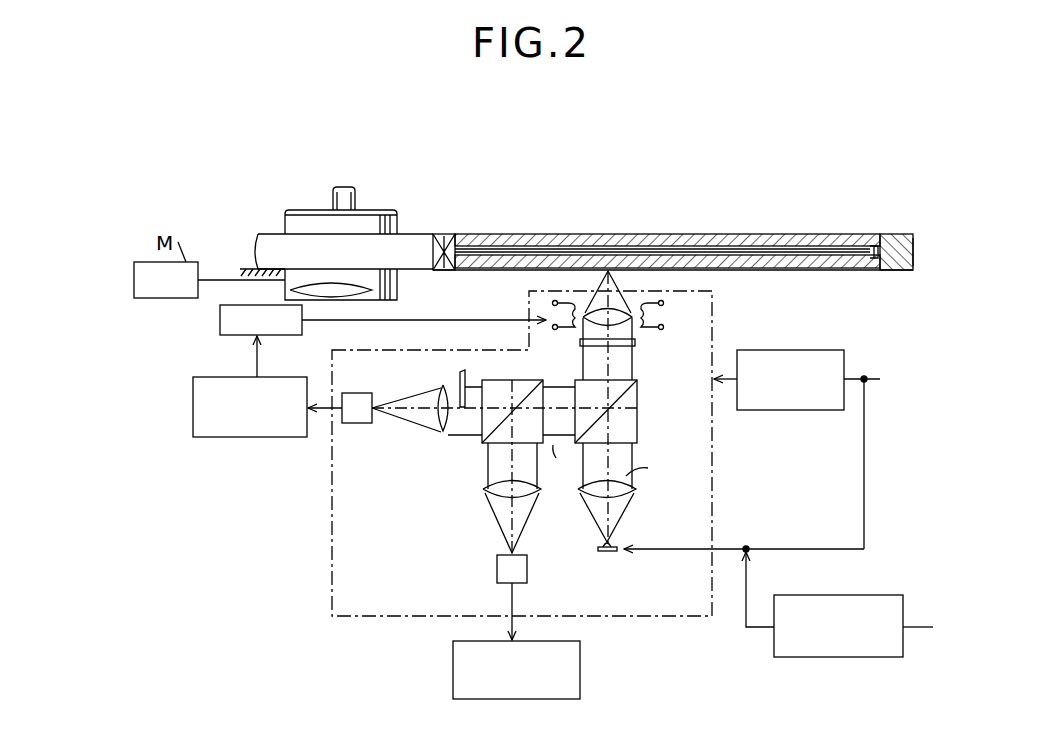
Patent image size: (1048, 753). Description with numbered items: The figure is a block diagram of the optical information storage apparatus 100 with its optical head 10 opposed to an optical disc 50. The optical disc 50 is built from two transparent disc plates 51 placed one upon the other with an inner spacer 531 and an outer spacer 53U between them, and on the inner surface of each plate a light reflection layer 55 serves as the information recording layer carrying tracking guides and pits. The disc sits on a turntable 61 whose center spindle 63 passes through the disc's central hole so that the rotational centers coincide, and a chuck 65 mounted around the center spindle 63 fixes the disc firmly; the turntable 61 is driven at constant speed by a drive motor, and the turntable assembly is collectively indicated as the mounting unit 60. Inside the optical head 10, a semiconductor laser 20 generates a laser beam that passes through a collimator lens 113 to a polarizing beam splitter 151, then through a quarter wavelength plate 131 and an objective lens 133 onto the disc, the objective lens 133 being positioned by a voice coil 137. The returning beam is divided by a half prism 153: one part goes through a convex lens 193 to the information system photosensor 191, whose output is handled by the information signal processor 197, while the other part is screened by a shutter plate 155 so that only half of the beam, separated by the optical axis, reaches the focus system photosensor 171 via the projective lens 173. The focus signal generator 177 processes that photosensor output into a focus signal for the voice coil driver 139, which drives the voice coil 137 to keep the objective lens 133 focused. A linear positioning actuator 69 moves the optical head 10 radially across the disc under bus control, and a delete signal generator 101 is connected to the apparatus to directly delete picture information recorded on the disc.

The optical information storage apparatus 100 is at (517, 172).
The optical head 60 is at (423, 150).
The turntable 61 is at (257, 268).
The center spindle 63 is at (346, 187).
The chuck 65 is at (396, 210).
The optical disc 50 is at (582, 232).
The transparent disc plate 51 is at (714, 234).
The light reflection layer 55 is at (676, 248).
The inner spacer 531 is at (447, 240).
The outer spacer 53U is at (888, 246).
The optical head 10 is at (713, 488).
The voice coil driver 139 is at (264, 337).
The focus signal generator 177 is at (260, 438).
The focus system photosensor 171 is at (360, 424).
The projective lens 173 is at (438, 431).
The shutter plate 155 is at (458, 376).
The half prism 153 is at (519, 382).
The polarizing beam splitter 151 is at (637, 432).
The objective lens 133 is at (628, 320).
The quarter wavelength plate 131 is at (636, 346).
The voice coil 137 is at (656, 311).
The convex lens 193 is at (536, 495).
The information system photosensor 191 is at (527, 571).
The collimator lens 113 is at (631, 495).
The semiconductor laser 20 is at (610, 553).
The linear positioning actuator 69 is at (810, 350).
The delete signal generator 101 is at (876, 595).
The information signal processor 197 is at (582, 669).